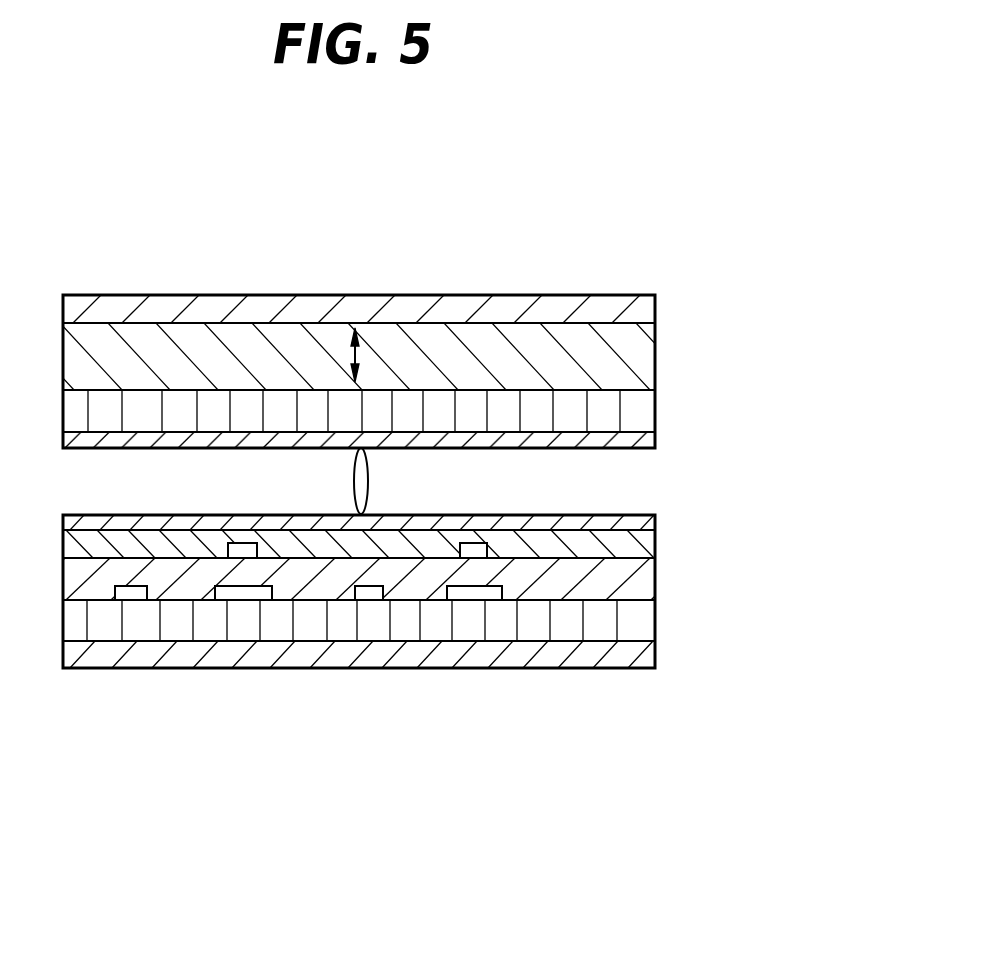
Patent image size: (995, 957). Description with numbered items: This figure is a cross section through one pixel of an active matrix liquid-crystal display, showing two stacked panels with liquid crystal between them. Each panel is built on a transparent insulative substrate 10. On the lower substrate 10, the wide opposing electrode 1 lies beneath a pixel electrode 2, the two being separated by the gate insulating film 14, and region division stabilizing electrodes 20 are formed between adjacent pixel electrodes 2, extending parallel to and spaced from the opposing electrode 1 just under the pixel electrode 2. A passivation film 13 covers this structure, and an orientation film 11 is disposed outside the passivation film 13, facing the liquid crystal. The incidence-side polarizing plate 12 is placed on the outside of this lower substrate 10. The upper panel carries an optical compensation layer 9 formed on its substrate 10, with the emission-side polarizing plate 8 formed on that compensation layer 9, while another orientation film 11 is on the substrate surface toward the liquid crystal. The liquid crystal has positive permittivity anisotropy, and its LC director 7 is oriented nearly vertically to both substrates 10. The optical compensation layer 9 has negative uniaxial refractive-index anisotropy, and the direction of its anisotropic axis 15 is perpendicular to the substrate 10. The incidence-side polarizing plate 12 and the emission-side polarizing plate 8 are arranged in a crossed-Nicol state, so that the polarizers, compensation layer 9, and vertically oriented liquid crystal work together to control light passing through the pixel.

The opposing electrode 1 is at (468, 603).
The pixel electrode 2 is at (241, 545).
The LC director 7 is at (368, 477).
The emission-side polarizing plate 8 is at (455, 295).
The optical compensation layer 9 is at (643, 348).
The transparent insulative substrate 10 is at (640, 407).
The orientation film 11 is at (645, 443).
The incidence-side polarizing plate 12 is at (87, 659).
The passivation film 13 is at (643, 550).
The gate insulating film 14 is at (643, 588).
The direction of anisotropic axis 15 is at (353, 355).
The region division stabilizing electrode 20 is at (365, 595).